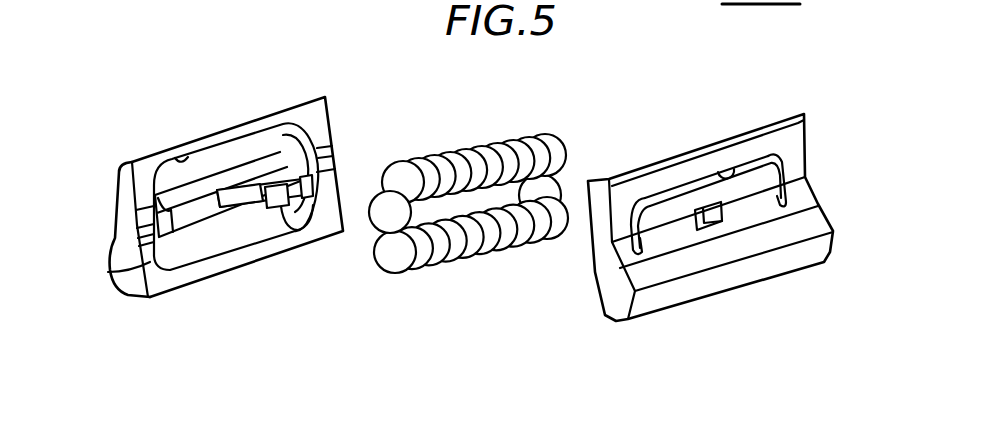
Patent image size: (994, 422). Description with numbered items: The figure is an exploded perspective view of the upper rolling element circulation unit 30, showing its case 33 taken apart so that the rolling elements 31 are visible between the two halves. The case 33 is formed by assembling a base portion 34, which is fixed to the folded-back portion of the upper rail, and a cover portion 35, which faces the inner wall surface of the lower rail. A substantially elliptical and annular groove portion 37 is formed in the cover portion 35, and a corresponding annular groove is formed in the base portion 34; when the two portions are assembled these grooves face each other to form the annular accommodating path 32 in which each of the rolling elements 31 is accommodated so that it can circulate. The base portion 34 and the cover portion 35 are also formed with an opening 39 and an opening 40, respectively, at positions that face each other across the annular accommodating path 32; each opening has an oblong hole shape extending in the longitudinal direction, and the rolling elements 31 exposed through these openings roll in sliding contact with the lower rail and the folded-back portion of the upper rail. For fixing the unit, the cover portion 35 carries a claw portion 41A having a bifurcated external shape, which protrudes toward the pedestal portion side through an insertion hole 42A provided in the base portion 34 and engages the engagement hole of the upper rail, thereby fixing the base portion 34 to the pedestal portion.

The rolling element circulation unit 30 is at (818, 388).
The rolling elements 31 is at (465, 142).
The annular accommodating path 32 is at (112, 270).
The case 33 is at (704, 362).
The base portion 34 is at (613, 324).
The cover portion 35 is at (213, 277).
The groove portion 37 is at (250, 238).
The opening 39 is at (731, 168).
The opening 40 is at (183, 155).
The claw portion 41A is at (300, 205).
The insertion hole 42A is at (694, 211).